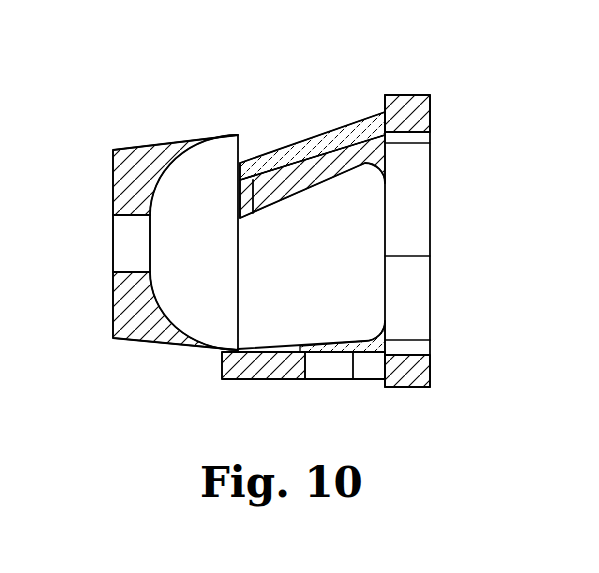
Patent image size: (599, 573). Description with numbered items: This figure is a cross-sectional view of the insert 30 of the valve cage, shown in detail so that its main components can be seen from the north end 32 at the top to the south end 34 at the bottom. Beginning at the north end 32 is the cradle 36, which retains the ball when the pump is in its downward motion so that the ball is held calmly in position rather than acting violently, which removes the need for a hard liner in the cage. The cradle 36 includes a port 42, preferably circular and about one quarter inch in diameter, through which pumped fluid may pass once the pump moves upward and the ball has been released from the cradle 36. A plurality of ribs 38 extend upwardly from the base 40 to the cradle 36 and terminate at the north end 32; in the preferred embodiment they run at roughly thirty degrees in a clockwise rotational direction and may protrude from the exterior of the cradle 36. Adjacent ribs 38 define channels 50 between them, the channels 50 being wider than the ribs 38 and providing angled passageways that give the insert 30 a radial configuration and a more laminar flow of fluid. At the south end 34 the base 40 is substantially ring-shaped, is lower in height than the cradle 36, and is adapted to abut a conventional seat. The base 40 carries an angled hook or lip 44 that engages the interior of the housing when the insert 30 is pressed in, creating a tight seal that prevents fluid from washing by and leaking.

The insert 30 is at (222, 76).
The north end 32 is at (112, 290).
The south end 34 is at (432, 155).
The cradle 36 is at (167, 238).
The ribs 38 is at (267, 154).
The base 40 is at (410, 350).
The port 42 is at (127, 262).
The lip 44 is at (377, 387).
The channels 50 is at (358, 292).